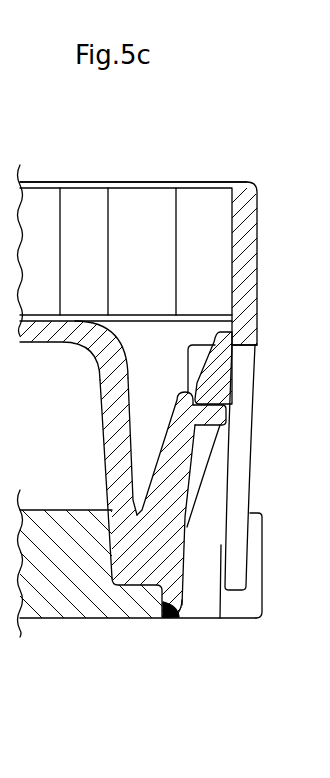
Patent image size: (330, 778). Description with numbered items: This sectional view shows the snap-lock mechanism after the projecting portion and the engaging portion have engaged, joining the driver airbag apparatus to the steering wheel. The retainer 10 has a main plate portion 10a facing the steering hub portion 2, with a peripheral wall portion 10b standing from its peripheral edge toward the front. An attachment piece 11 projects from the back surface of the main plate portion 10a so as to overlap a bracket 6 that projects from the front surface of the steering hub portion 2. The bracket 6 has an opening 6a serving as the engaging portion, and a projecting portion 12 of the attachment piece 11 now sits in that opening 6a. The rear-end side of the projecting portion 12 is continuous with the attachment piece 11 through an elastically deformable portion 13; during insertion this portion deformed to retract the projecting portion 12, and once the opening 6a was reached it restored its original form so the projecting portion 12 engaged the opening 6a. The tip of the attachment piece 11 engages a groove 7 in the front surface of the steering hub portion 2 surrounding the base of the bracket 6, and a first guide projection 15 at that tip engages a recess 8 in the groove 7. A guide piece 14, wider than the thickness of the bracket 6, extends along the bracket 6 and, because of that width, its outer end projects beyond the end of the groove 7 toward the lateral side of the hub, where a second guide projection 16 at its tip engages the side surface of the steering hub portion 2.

The steering hub portion 2 is at (30, 507).
The bracket 6 is at (232, 363).
The opening 6a is at (218, 473).
The groove 7 is at (113, 560).
The recess 8 is at (168, 606).
The retainer 10 is at (205, 161).
The main plate portion 10a is at (40, 343).
The peripheral wall portion 10b is at (128, 181).
The attachment piece 11 is at (103, 415).
The projecting portion 12 is at (218, 410).
The elastically deformable portion 13 is at (153, 495).
The guide piece 14 is at (239, 498).
The first guide projection 15 is at (183, 607).
The second guide projection 16 is at (237, 594).